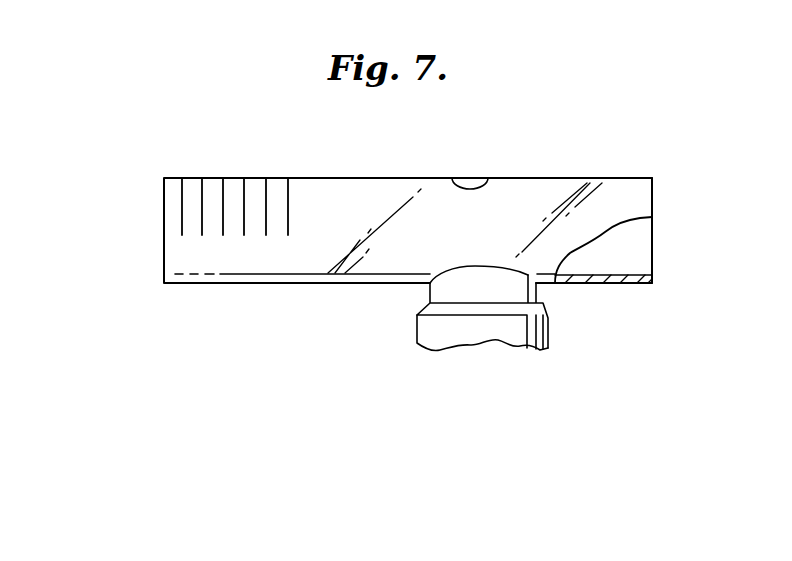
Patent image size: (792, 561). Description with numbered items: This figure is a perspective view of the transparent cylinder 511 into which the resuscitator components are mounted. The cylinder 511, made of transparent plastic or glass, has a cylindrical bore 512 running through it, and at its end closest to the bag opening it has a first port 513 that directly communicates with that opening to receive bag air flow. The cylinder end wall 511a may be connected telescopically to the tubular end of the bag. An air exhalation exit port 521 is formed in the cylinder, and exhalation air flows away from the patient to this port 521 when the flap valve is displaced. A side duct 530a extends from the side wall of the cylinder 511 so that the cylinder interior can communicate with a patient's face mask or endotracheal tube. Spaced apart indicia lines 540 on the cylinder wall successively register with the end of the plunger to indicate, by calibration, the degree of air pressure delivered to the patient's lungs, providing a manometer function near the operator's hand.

The cylinder 511 is at (275, 282).
The cylinder end wall 511a is at (630, 278).
The cylindrical bore 512 is at (576, 276).
The first port 513 is at (653, 246).
The air exhalation exit port 521 is at (470, 188).
The side duct 530a is at (423, 328).
The indicia lines 540 is at (204, 197).